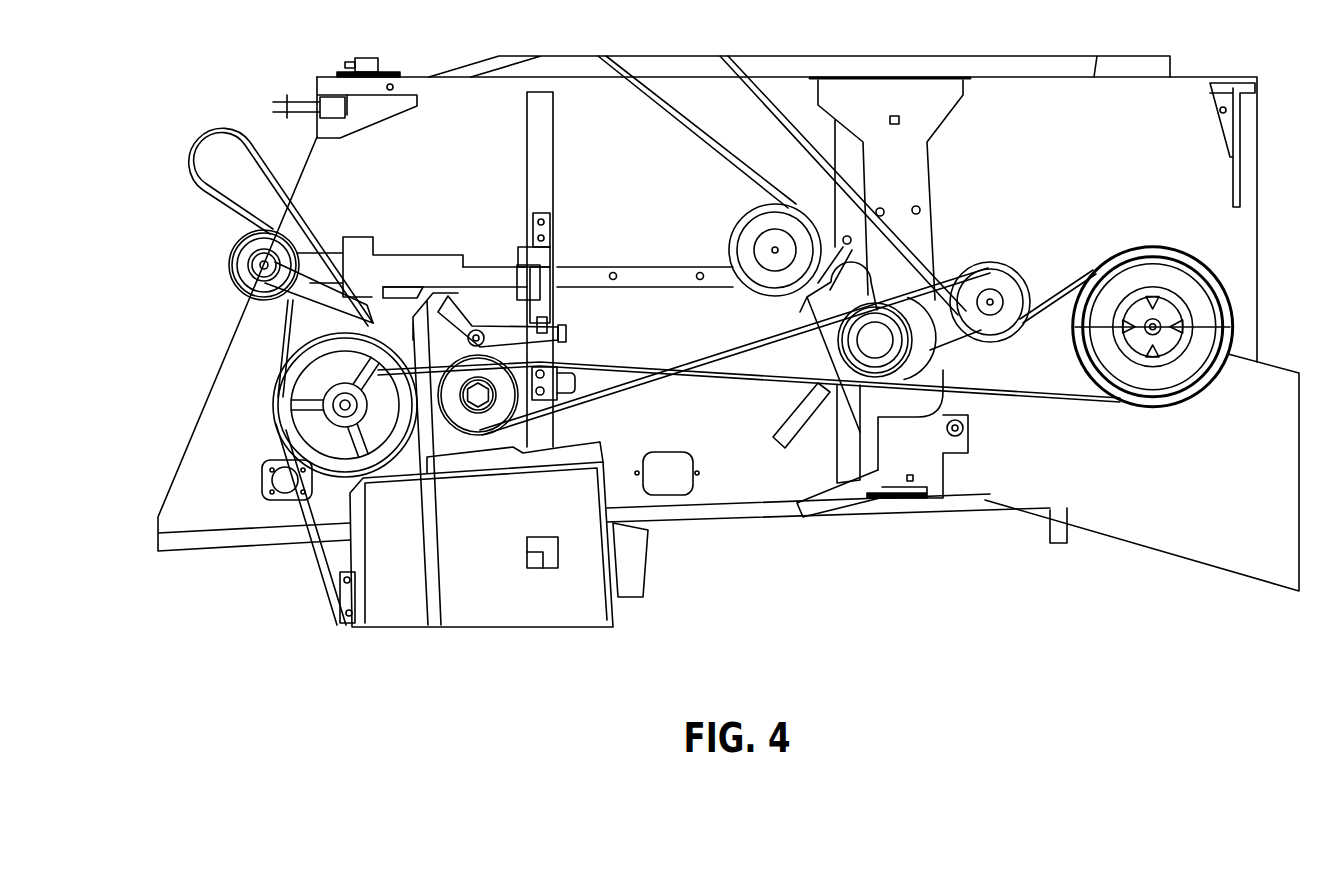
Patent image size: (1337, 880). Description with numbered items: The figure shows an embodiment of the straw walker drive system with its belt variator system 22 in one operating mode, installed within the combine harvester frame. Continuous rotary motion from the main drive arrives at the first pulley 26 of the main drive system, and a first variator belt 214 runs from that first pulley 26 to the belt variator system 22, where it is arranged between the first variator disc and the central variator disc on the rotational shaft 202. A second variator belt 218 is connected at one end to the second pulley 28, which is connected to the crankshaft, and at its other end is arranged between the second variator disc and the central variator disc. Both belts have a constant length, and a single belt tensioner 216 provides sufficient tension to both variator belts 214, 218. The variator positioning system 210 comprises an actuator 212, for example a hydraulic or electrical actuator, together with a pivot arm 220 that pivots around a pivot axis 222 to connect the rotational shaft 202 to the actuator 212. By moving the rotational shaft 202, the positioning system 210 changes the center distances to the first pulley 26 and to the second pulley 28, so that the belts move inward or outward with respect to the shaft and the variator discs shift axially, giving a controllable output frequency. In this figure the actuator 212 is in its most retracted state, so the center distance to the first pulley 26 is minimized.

The belt variator system 22 is at (469, 423).
The first pulley 26 is at (1112, 402).
The second pulley 28 is at (247, 388).
The rotational shaft 202 is at (481, 397).
The variator positioning system 210 is at (566, 303).
The actuator 212 is at (555, 287).
The first variator belt 214 is at (757, 383).
The belt tensioner 216 is at (1000, 252).
The second variator belt 218 is at (397, 440).
The pivot arm 220 is at (497, 335).
The pivot axis 222 is at (475, 330).